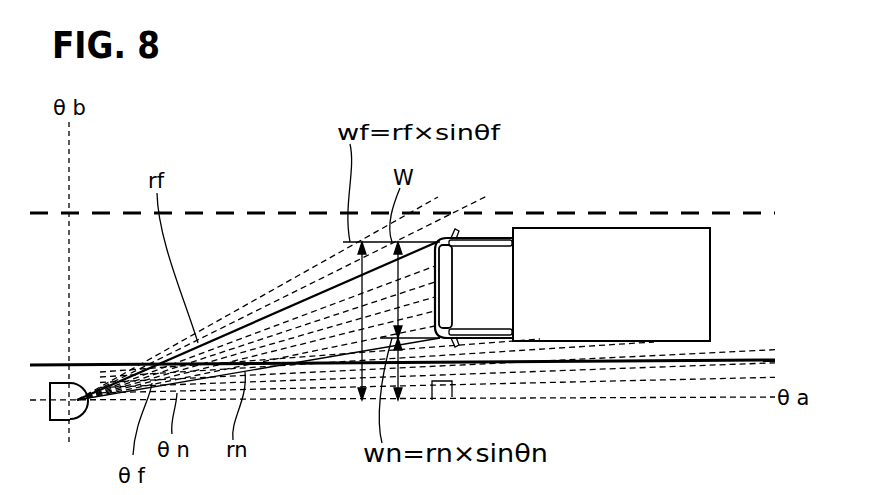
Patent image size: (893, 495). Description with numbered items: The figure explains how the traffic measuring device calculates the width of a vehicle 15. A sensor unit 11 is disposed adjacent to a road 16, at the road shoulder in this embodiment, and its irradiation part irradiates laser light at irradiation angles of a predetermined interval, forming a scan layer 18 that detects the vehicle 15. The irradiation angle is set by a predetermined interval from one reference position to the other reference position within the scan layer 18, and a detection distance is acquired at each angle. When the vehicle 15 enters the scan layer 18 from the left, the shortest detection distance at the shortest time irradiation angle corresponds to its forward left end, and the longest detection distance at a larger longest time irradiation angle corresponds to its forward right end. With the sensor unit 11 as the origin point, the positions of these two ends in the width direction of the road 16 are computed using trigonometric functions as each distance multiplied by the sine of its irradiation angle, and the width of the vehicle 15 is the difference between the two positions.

The sensor unit 11 is at (62, 422).
The vehicle 15 is at (608, 245).
The road 16 is at (758, 228).
The scan layer 18 is at (246, 249).